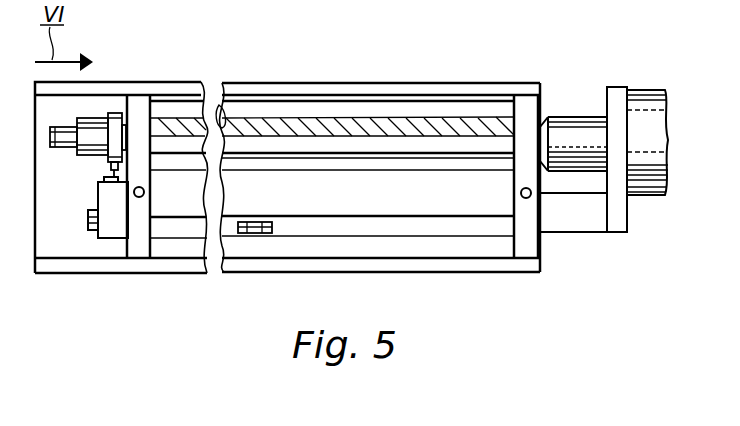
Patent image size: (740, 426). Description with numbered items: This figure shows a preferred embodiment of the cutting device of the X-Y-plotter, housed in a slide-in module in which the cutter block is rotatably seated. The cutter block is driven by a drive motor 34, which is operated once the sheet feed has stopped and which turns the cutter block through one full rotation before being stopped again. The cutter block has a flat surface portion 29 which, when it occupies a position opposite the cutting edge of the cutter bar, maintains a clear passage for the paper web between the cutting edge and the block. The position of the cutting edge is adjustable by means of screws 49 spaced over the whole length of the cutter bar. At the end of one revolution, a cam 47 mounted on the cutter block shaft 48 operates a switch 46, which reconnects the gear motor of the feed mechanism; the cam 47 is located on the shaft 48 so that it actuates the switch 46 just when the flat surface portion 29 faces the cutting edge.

The flat surface portion 29 is at (408, 158).
The drive motor 34 is at (652, 198).
The switch 46 is at (118, 231).
The cam 47 is at (111, 170).
The cutter block shaft 48 is at (60, 147).
The screws 49 is at (253, 232).